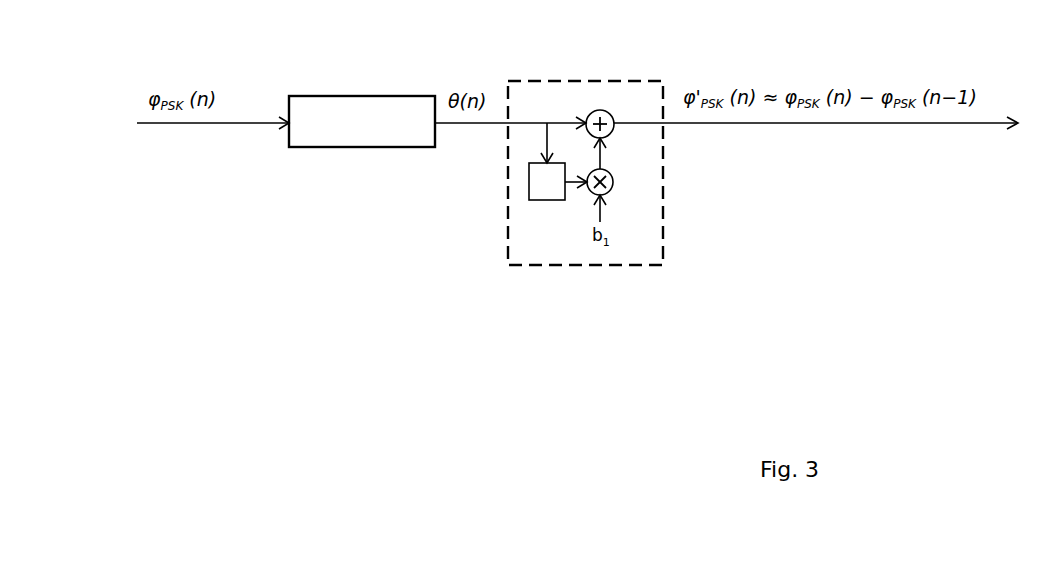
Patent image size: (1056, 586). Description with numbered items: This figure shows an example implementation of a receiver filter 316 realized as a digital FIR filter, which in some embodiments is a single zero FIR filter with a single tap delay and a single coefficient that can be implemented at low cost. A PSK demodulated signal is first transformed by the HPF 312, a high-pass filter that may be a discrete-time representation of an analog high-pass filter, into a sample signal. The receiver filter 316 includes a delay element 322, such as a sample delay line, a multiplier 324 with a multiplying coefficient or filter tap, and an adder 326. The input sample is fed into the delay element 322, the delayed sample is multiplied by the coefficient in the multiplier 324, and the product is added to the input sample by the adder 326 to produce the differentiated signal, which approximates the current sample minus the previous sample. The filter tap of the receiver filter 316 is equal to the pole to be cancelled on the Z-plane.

The HPF 312 is at (376, 100).
The receiver filter 316 is at (642, 82).
The delay element 322 is at (529, 185).
The multiplier 324 is at (613, 187).
The adder 326 is at (598, 100).